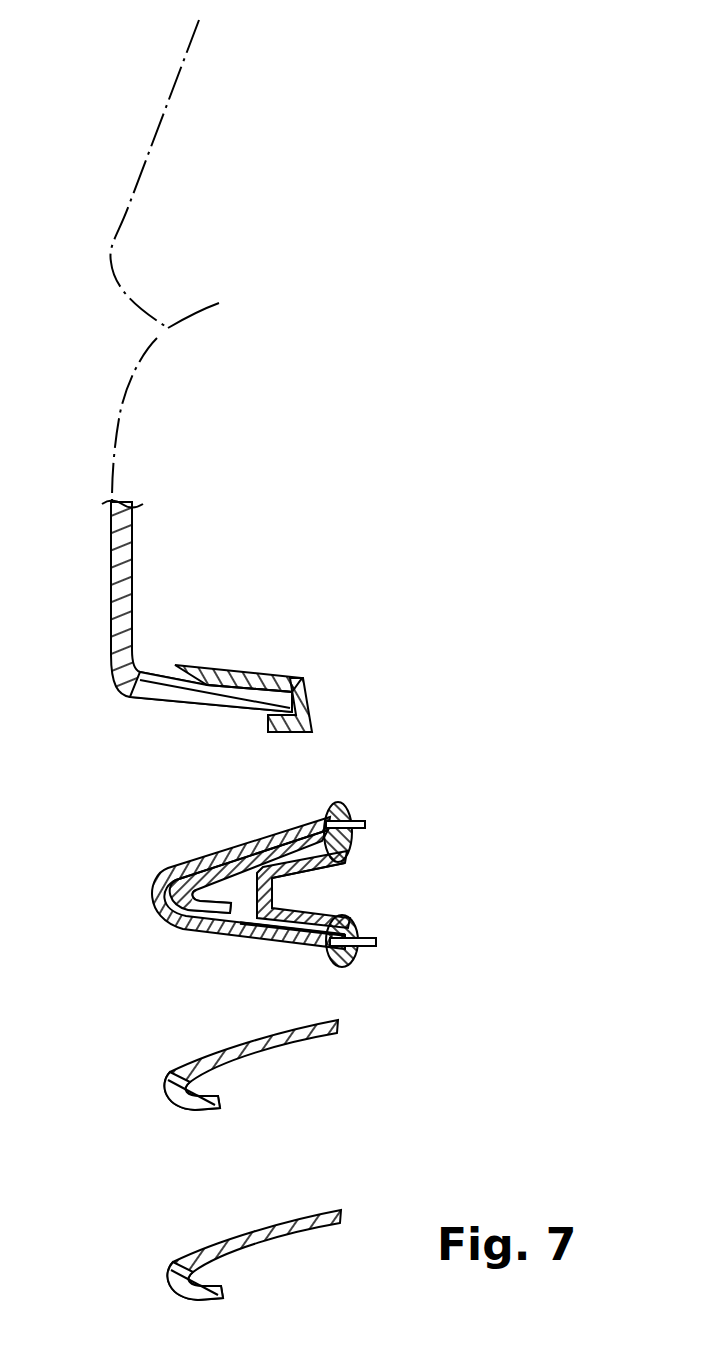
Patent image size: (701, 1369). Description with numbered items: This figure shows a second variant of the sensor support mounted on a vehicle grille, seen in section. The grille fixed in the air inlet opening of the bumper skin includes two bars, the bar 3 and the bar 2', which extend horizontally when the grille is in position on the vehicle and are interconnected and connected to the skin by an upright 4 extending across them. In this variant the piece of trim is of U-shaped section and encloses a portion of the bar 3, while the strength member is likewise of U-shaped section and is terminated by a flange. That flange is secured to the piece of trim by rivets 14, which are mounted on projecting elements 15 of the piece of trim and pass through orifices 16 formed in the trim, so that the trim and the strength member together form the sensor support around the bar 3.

The upright 4 is at (113, 590).
The bar 3 is at (241, 862).
The rivet 14 is at (363, 810).
The projecting element 15 is at (366, 824).
The orifice 16 is at (367, 923).
The bar 2' is at (248, 1255).